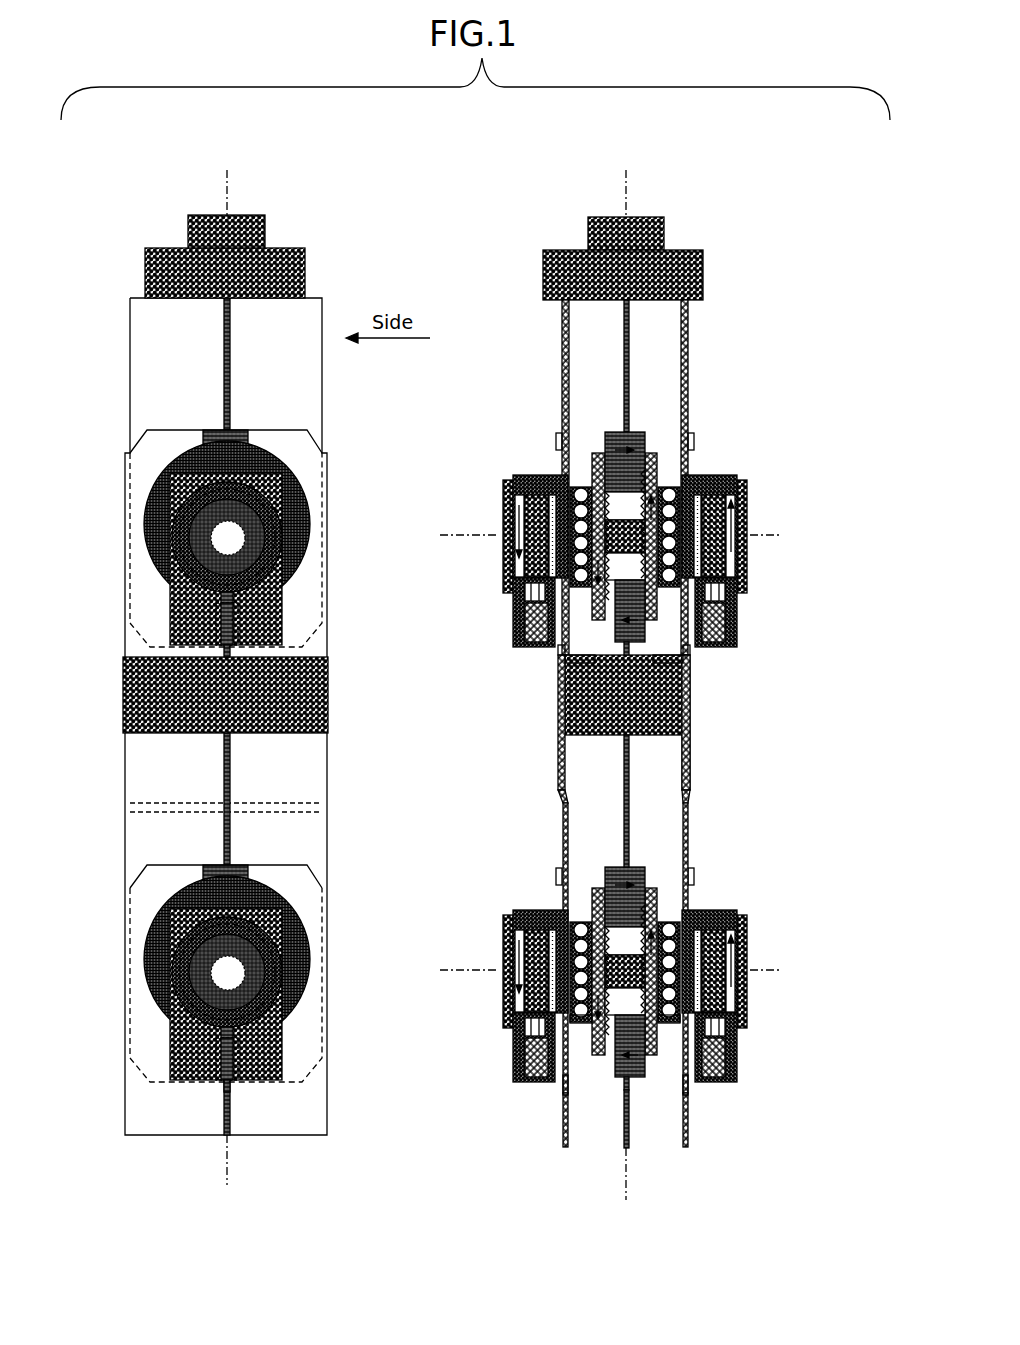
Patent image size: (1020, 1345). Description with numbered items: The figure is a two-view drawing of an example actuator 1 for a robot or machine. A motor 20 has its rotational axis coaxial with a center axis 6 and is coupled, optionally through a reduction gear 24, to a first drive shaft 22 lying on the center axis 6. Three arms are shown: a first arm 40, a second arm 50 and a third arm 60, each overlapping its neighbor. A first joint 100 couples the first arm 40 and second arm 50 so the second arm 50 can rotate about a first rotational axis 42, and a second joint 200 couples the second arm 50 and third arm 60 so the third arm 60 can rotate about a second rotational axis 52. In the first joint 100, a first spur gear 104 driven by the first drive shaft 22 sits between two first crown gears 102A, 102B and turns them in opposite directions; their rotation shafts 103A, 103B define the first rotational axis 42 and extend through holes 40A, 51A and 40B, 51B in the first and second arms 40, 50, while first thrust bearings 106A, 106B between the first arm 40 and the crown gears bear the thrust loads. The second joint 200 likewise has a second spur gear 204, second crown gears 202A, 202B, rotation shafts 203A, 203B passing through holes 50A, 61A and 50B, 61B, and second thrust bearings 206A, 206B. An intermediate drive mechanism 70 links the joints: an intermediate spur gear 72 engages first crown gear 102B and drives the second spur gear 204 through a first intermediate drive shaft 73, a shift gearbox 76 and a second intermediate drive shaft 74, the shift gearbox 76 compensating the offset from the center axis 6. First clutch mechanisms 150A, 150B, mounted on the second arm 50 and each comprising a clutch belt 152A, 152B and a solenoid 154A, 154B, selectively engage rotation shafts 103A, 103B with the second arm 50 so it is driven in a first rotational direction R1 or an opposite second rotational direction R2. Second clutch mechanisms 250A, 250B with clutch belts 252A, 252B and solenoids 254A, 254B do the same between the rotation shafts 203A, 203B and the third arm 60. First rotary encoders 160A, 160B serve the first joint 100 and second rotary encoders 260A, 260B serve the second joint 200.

The actuator 1 is at (371, 143).
The center axis 6 is at (229, 173).
The motor 20 is at (247, 216).
The first drive shaft 22 is at (630, 336).
The reduction gear 24 is at (680, 251).
The first arm 40 is at (562, 333).
The hole 40A is at (562, 410).
The hole 40B is at (688, 400).
The first rotational axis 42 is at (500, 543).
The second arm 50 is at (558, 785).
The hole 50A is at (560, 832).
The hole 50B is at (690, 836).
The hole 51A is at (562, 650).
The hole 51B is at (689, 648).
The second rotational axis 52 is at (500, 978).
The third arm 60 is at (562, 1143).
The hole 61A is at (562, 1085).
The hole 61B is at (689, 1090).
The intermediate drive mechanism 70 is at (762, 693).
The intermediate spur gear 72 is at (690, 662).
The first intermediate drive shaft 73 is at (691, 676).
The second intermediate drive shaft 74 is at (629, 766).
The shift gearbox 76 is at (691, 700).
The first joint 100 is at (458, 527).
The first crown gear 102A is at (600, 455).
The first crown gear 102B is at (655, 478).
The rotation shaft 103A is at (559, 435).
The rotation shaft 103B is at (693, 436).
The first spur gear 104 is at (634, 431).
The first thrust bearing 106A is at (585, 660).
The first thrust bearing 106B is at (630, 652).
The first clutch mechanism 150A is at (433, 610).
The first clutch mechanism 150B is at (812, 573).
The clutch belt 152A is at (513, 577).
The clutch belt 152B is at (738, 577).
The solenoid 154A is at (513, 620).
The solenoid 154B is at (735, 620).
The first rotary encoder 160A is at (507, 480).
The first rotary encoder 160B is at (744, 480).
The second joint 200 is at (458, 962).
The second crown gear 202A is at (598, 888).
The second crown gear 202B is at (655, 888).
The rotation shaft 203A is at (559, 870).
The rotation shaft 203B is at (693, 871).
The second spur gear 204 is at (630, 864).
The second thrust bearing 206A is at (586, 1062).
The second thrust bearing 206B is at (676, 1030).
The second clutch mechanism 250A is at (433, 1046).
The second clutch mechanism 250B is at (812, 1046).
The clutch belt 252A is at (513, 1012).
The clutch belt 252B is at (738, 1012).
The solenoid 254A is at (513, 1055).
The solenoid 254B is at (735, 1055).
The second rotary encoder 260A is at (507, 915).
The second rotary encoder 260B is at (744, 915).
The first rotational direction R1 is at (513, 556).
The second rotational direction R2 is at (748, 505).